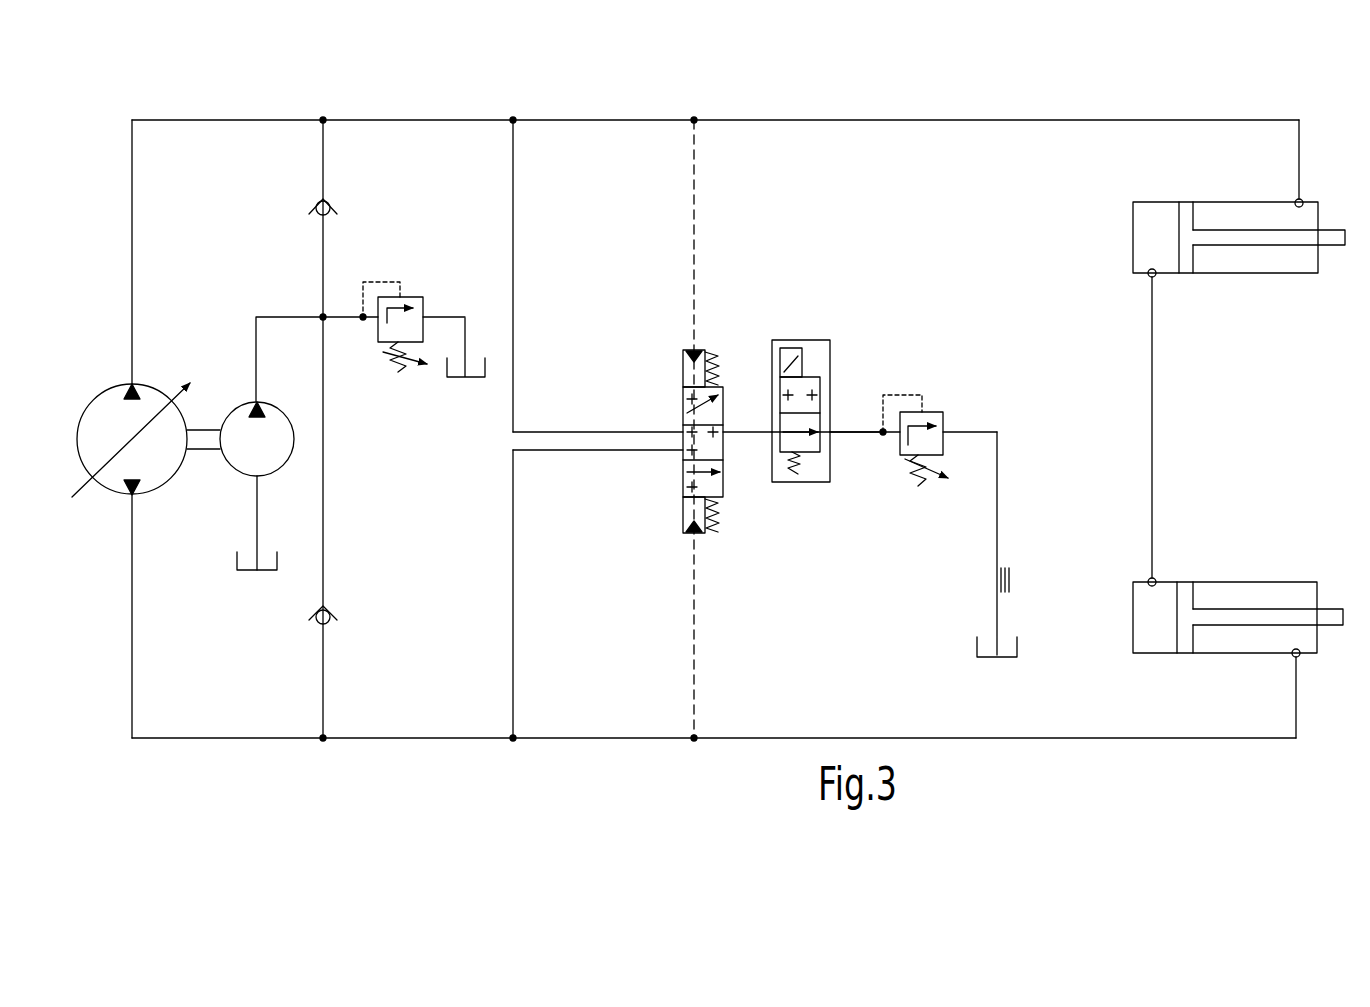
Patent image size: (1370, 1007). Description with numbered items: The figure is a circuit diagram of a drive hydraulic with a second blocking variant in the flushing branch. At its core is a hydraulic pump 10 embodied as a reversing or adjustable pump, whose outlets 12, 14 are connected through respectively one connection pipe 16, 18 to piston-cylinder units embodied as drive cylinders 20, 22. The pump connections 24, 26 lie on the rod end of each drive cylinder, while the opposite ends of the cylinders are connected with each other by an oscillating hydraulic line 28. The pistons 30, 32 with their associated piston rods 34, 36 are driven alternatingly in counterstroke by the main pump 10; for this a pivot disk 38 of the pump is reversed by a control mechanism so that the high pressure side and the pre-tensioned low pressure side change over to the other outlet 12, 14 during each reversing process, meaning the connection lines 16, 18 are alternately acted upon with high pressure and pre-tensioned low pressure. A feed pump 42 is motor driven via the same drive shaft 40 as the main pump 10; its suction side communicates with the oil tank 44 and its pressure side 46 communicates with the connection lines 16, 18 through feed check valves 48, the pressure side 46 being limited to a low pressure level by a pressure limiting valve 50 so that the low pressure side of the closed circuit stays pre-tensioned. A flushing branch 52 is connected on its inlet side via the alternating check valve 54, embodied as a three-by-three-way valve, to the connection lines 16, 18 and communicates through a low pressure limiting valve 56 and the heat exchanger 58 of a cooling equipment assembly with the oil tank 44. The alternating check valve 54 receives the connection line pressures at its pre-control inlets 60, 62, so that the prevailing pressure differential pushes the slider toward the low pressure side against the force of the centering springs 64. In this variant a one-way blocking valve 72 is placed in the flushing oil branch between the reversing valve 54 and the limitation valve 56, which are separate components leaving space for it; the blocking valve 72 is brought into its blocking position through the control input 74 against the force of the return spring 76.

The hydraulic pump 10 is at (148, 410).
The outlet 12 is at (130, 385).
The outlet 14 is at (130, 492).
The connection pipe 16 is at (228, 120).
The connection pipe 18 is at (185, 738).
The drive cylinder 20 is at (1160, 202).
The drive cylinder 22 is at (1228, 582).
The pump connection 24 is at (1302, 199).
The pump connection 26 is at (1299, 657).
The oscillating hydraulic line 28 is at (1155, 425).
The piston 30 is at (1187, 272).
The piston 32 is at (1187, 590).
The piston rod 34 is at (1287, 240).
The piston rod 36 is at (1272, 622).
The pivot disk 38 is at (180, 395).
The drive shaft 40 is at (204, 442).
The feed pump 42 is at (275, 420).
The oil tank 44 is at (264, 572).
The pressure side 46 is at (256, 402).
The feed check valve 48 is at (335, 204).
The pressure limiting valve 50 is at (410, 318).
The flushing branch 52 is at (856, 428).
The alternating check valve 54 is at (722, 410).
The low pressure limiting valve 56 is at (937, 412).
The heat exchanger 58 is at (1012, 584).
The pre-control inlet 60 is at (686, 358).
The pre-control inlet 62 is at (690, 512).
The centering spring 64 is at (712, 356).
The one-way blocking valve 72 is at (816, 405).
The control input 74 is at (790, 348).
The return spring 76 is at (800, 480).